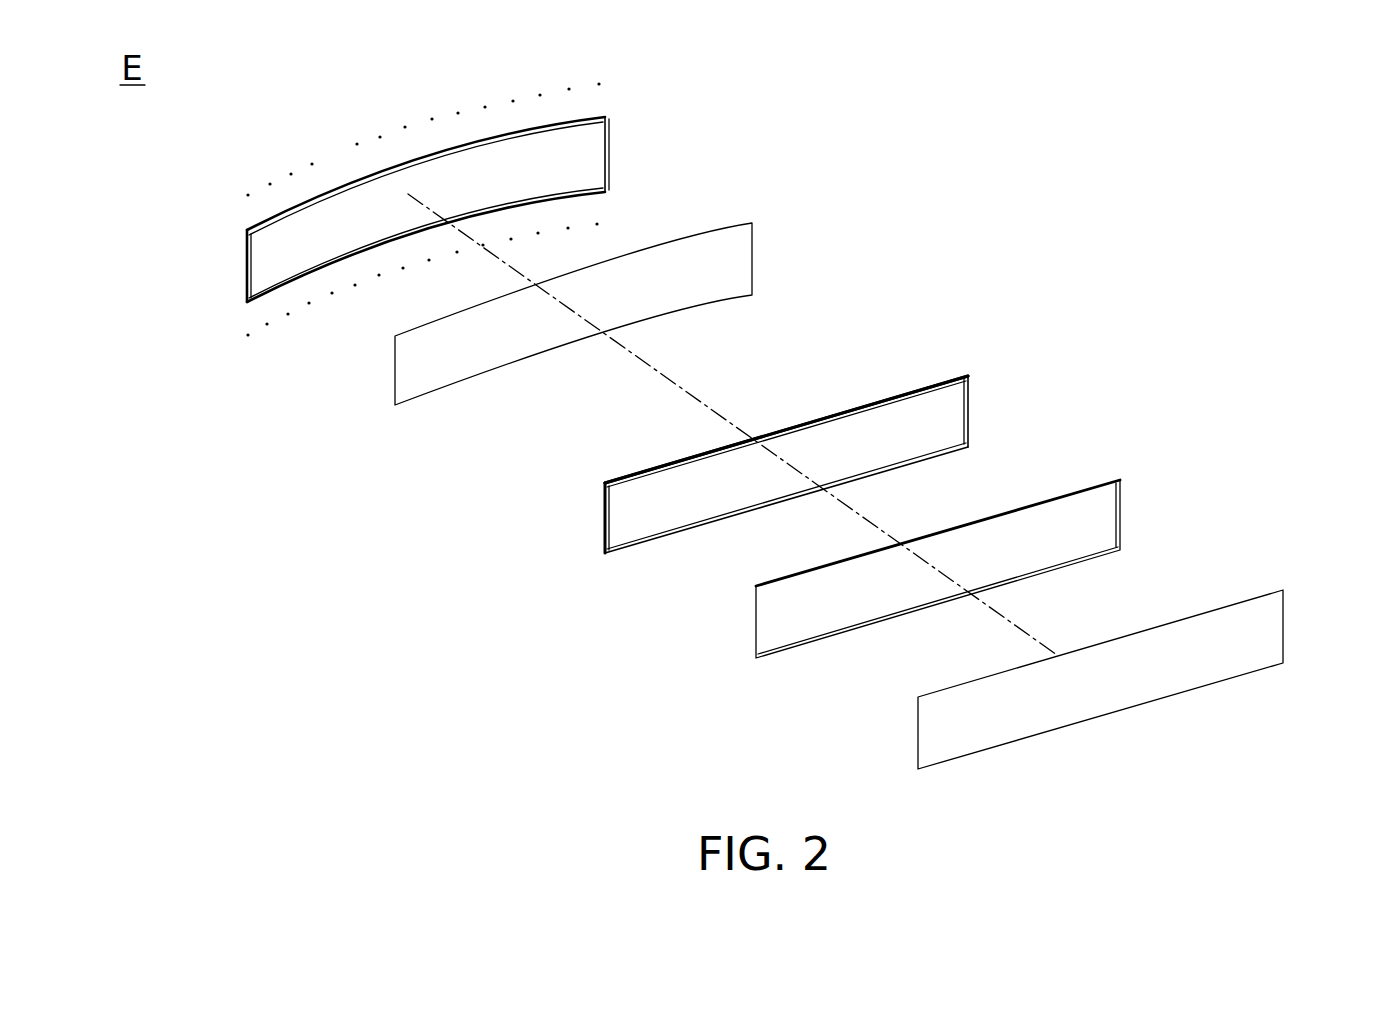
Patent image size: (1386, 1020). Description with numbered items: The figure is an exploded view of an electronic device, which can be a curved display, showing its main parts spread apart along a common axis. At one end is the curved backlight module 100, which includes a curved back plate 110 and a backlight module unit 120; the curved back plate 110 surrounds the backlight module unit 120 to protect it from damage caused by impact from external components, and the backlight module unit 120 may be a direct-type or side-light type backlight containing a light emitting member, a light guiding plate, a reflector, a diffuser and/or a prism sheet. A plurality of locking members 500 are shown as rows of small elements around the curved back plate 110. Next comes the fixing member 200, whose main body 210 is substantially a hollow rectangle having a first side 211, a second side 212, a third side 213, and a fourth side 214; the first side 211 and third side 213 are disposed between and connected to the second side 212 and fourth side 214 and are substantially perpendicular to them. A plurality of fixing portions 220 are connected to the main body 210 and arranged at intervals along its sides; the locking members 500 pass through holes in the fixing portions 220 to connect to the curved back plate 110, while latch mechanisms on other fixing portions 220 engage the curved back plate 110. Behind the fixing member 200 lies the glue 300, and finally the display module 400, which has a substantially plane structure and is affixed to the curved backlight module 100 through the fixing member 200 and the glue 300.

The curved backlight module 100 is at (820, 97).
The curved back plate 110 is at (607, 167).
The backlight module unit 120 is at (714, 222).
The fixing member 200 is at (975, 366).
The main body 210 is at (603, 553).
The first side 211 is at (668, 463).
The second side 212 is at (600, 505).
The third side 213 is at (650, 548).
The fourth side 214 is at (970, 409).
The fixing portions 220 is at (820, 416).
The glue 300 is at (1128, 472).
The display module 400 is at (1292, 580).
The locking members 500 is at (333, 155).